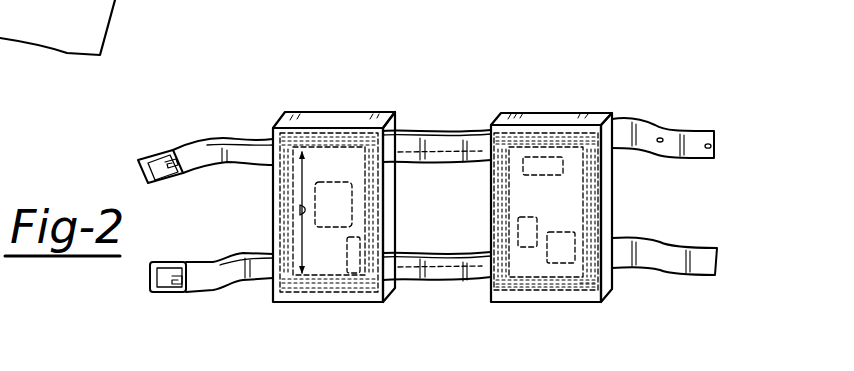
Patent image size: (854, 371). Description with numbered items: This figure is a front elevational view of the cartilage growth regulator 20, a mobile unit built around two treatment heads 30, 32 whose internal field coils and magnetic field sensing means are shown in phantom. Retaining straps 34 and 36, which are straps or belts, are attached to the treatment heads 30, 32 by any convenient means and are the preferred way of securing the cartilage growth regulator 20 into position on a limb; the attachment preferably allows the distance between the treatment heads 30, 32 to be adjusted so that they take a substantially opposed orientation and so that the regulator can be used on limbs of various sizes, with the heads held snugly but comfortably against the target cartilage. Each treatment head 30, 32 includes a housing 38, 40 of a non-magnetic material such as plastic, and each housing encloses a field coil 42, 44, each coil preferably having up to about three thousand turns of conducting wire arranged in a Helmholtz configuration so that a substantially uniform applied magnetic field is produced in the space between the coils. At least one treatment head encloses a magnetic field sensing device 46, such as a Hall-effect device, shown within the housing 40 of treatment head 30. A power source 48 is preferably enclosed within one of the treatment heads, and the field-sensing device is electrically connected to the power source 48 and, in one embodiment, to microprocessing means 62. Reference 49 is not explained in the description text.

The cartilage growth regulator 20 is at (334, 74).
The treatment head 30 is at (364, 108).
The treatment head 32 is at (569, 108).
The retaining strap 34 is at (229, 138).
The retaining strap 36 is at (240, 284).
The housing 38 is at (610, 190).
The housing 40 is at (393, 246).
The field coil 42 is at (592, 287).
The field coil 44 is at (276, 212).
The magnetic field sensing device 46 is at (352, 207).
The power source 48 is at (534, 176).
The indicator 49 is at (527, 249).
The microprocessing means 62 is at (576, 249).